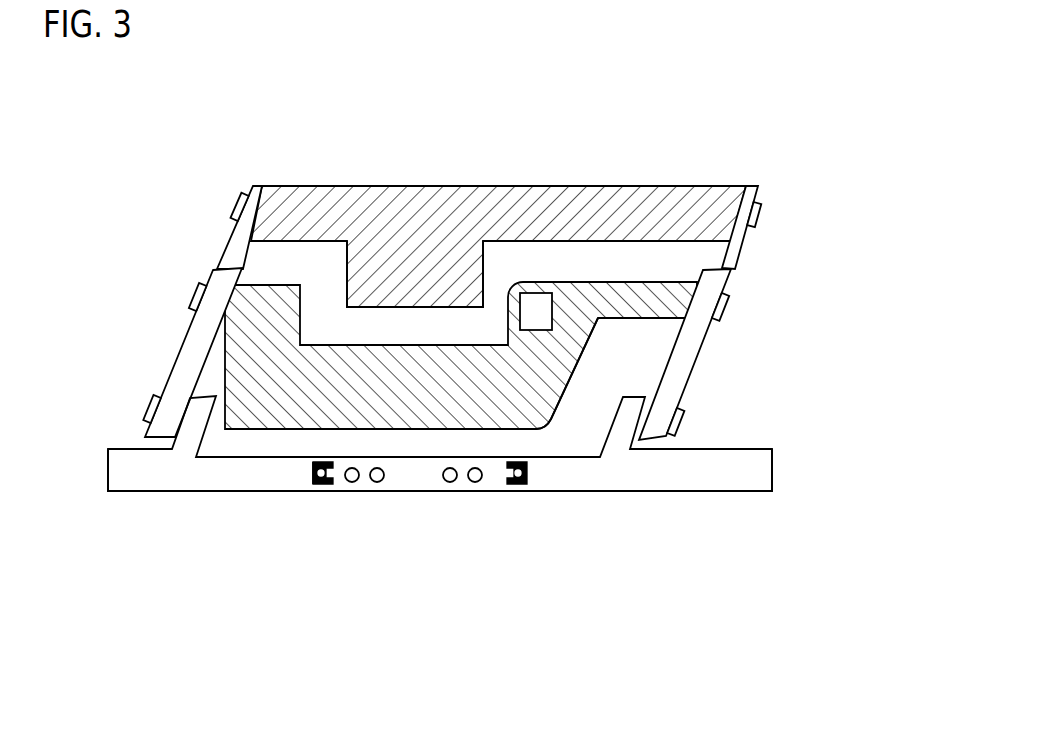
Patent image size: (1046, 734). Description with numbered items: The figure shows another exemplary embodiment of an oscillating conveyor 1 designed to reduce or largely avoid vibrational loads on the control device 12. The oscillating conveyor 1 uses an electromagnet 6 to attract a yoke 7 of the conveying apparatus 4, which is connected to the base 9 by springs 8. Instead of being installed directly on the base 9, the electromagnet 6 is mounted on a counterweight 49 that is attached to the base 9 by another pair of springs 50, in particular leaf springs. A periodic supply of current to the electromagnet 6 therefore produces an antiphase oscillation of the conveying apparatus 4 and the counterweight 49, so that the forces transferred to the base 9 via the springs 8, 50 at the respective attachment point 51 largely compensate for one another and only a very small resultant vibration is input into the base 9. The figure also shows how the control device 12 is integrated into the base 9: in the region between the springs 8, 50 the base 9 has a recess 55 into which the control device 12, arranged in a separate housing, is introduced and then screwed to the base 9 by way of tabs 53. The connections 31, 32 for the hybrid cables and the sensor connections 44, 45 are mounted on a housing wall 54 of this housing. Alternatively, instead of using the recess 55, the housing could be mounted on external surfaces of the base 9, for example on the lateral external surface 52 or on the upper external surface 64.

The oscillating conveyor 1 is at (568, 170).
The conveying apparatus 4 is at (625, 200).
The electromagnet 6 is at (540, 308).
The yoke 7 is at (362, 283).
The springs 8 is at (740, 247).
The base 9 is at (733, 482).
The control device 12 is at (414, 497).
The connection 31 is at (450, 483).
The connection 32 is at (476, 483).
The sensor connection 44 is at (352, 483).
The sensor connection 45 is at (376, 483).
The counterweight 49 is at (535, 413).
The springs 50 is at (677, 370).
The attachment point 51 is at (160, 390).
The lateral external surface 52 is at (305, 473).
The tabs 53 is at (520, 485).
The housing wall 54 is at (402, 473).
The recess 55 is at (327, 495).
The upper external surface 64 is at (732, 433).